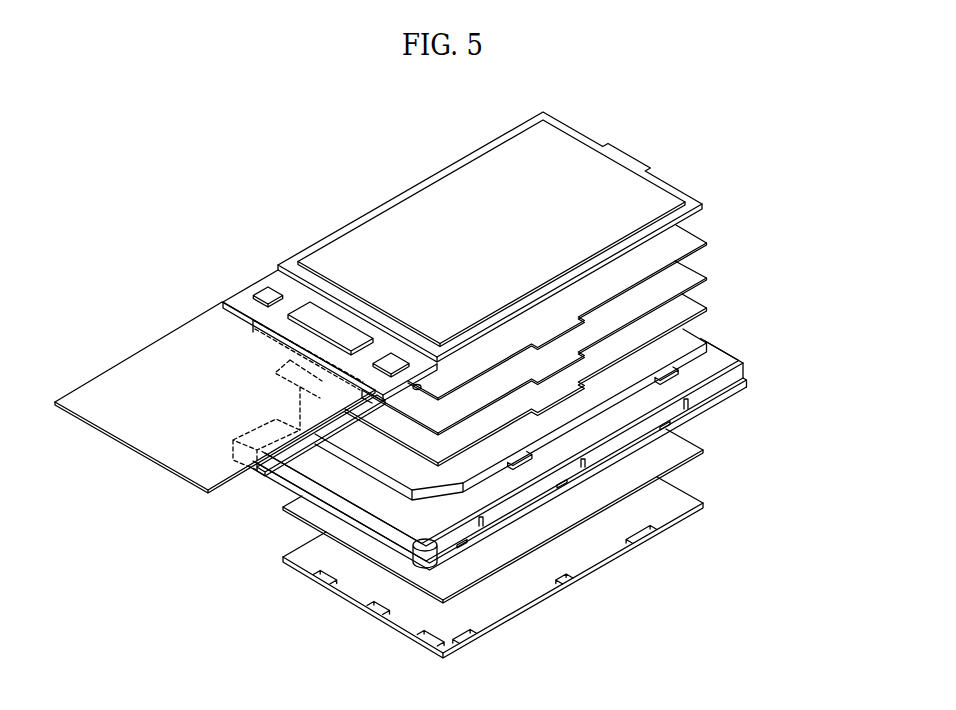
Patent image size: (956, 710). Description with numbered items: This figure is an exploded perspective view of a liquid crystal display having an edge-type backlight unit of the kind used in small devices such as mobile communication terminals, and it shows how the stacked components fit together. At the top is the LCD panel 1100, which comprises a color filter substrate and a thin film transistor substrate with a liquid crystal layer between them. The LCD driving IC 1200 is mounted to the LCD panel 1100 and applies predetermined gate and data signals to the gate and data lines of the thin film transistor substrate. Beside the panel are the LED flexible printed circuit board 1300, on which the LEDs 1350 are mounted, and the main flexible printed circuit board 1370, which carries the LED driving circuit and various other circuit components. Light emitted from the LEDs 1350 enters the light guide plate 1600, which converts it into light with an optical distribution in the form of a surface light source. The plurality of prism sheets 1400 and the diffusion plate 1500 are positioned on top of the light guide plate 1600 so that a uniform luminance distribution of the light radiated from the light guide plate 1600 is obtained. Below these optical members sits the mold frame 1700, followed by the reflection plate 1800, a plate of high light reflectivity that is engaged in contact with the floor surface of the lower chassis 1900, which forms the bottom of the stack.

The LCD panel 1100 is at (657, 197).
The LCD driving IC 1200 is at (300, 313).
The LED flexible printed circuit board 1300 is at (368, 398).
The LEDs 1350 is at (270, 346).
The main flexible printed circuit board 1370 is at (141, 351).
The prism sheets 1400 is at (682, 282).
The diffusion plate 1500 is at (687, 310).
The light guide plate 1600 is at (690, 338).
The mold frame 1700 is at (747, 378).
The reflection plate 1800 is at (693, 447).
The lower chassis 1900 is at (693, 510).